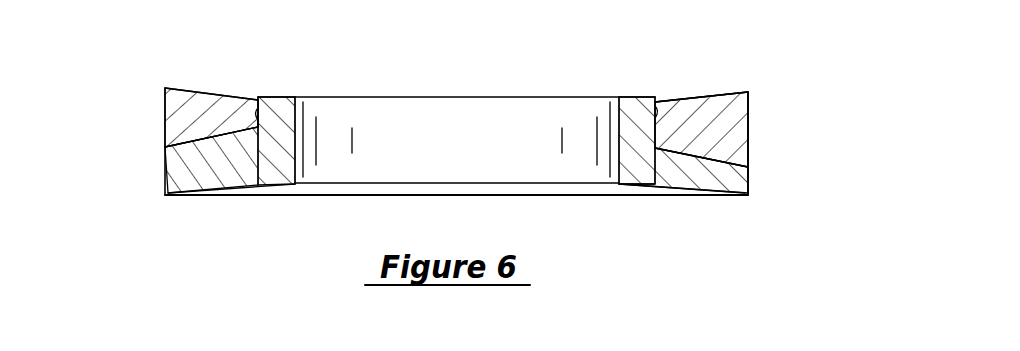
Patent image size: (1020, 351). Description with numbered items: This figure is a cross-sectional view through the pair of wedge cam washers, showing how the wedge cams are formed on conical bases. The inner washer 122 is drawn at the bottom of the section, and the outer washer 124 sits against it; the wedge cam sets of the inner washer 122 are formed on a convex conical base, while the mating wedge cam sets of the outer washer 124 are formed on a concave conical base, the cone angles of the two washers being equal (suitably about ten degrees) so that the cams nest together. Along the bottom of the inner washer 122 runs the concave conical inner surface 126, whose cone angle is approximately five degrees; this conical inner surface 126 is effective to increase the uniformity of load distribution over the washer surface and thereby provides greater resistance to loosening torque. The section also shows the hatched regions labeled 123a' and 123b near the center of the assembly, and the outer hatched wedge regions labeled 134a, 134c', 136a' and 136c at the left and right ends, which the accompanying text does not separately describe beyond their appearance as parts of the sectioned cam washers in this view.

The inner washer 122 is at (781, 175).
The inner ring segment 123a' is at (608, 180).
The inner ring segment 123b is at (270, 97).
The outer washer 124 is at (750, 80).
The concave conical inner surface 126 is at (675, 196).
The lower wedge 134a is at (733, 162).
The upper wedge 134c' is at (158, 117).
The upper wedge 136a' is at (761, 129).
The lower wedge 136c is at (165, 159).